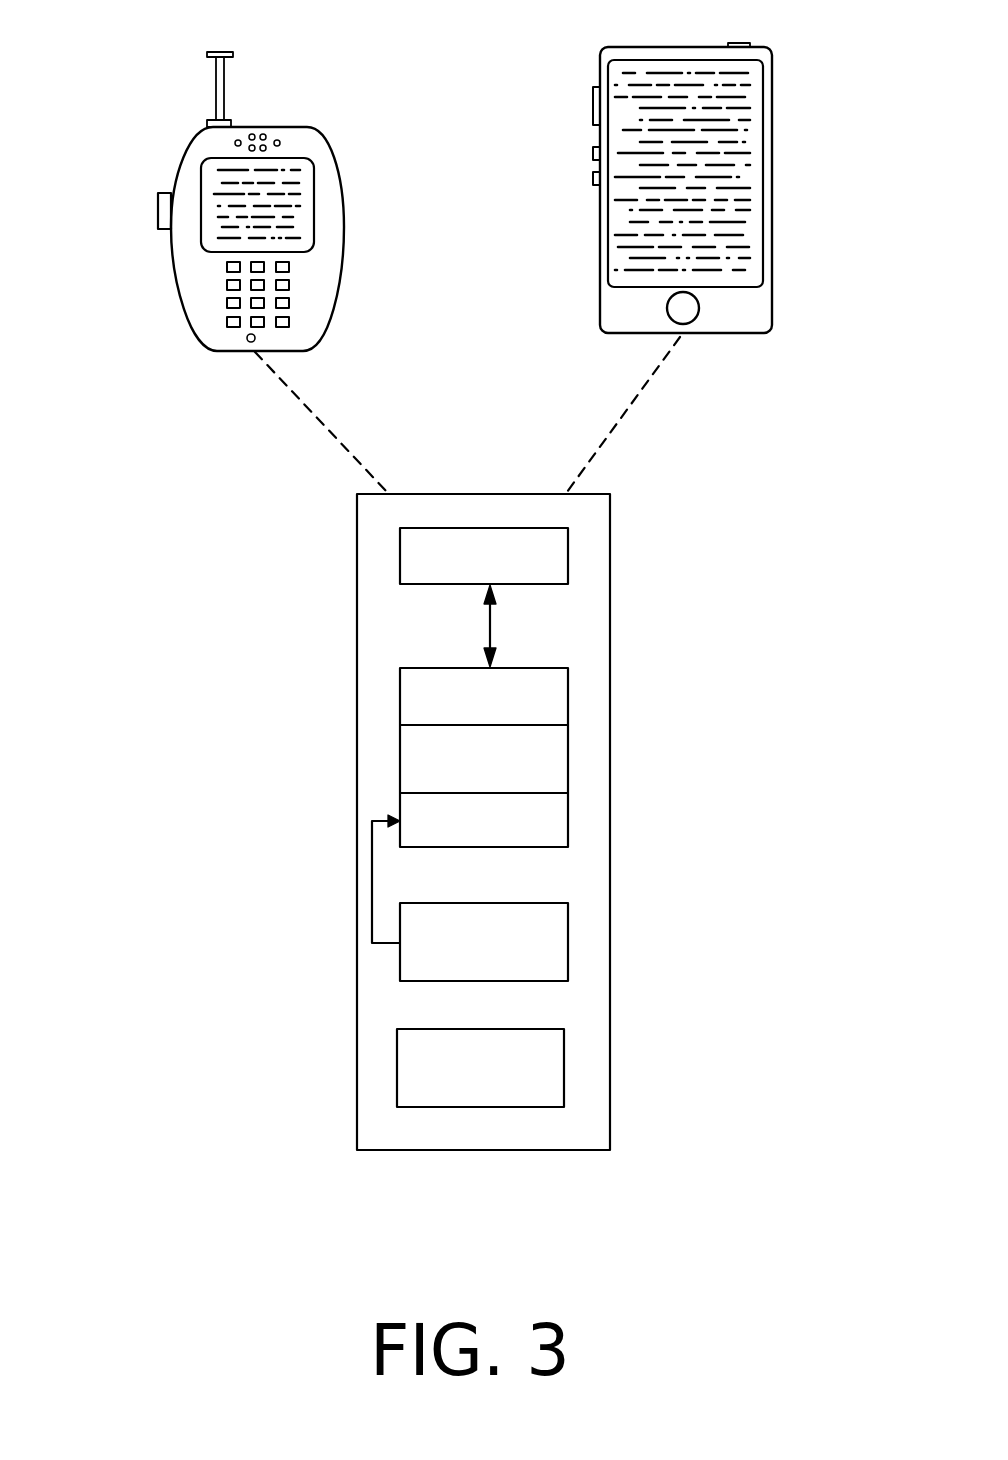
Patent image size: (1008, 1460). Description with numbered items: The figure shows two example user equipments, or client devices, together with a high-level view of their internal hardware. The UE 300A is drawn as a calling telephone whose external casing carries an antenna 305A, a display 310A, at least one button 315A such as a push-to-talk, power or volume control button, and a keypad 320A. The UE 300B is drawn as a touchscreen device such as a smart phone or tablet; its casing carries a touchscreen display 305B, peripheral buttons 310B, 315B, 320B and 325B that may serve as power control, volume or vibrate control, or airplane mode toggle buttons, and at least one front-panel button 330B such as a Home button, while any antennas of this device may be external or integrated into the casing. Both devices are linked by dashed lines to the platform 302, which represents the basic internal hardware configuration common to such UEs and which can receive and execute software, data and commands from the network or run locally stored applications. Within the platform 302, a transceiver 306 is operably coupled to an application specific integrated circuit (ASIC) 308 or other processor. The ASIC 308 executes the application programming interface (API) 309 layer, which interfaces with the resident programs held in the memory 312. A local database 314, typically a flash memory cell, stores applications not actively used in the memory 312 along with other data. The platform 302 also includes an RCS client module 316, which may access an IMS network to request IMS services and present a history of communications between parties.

The UE 300A is at (316, 333).
The antenna 305A is at (224, 75).
The display 310A is at (314, 205).
The button 315A is at (158, 205).
The keypad 320A is at (289, 285).
The UE 300B is at (645, 47).
The touchscreen display 305B is at (772, 83).
The peripheral button 310B is at (738, 43).
The peripheral button 315B is at (593, 107).
The peripheral button 320B is at (593, 153).
The peripheral button 325B is at (593, 178).
The front-panel button 330B is at (667, 309).
The platform 302 is at (357, 605).
The transceiver 306 is at (568, 551).
The application specific integrated circuit 308 is at (568, 694).
The application programming interface 309 is at (568, 754).
The memory 312 is at (568, 819).
The local database 314 is at (568, 941).
The RCS client module 316 is at (564, 1097).